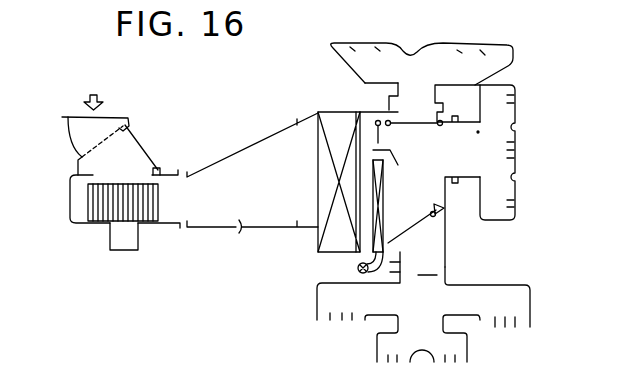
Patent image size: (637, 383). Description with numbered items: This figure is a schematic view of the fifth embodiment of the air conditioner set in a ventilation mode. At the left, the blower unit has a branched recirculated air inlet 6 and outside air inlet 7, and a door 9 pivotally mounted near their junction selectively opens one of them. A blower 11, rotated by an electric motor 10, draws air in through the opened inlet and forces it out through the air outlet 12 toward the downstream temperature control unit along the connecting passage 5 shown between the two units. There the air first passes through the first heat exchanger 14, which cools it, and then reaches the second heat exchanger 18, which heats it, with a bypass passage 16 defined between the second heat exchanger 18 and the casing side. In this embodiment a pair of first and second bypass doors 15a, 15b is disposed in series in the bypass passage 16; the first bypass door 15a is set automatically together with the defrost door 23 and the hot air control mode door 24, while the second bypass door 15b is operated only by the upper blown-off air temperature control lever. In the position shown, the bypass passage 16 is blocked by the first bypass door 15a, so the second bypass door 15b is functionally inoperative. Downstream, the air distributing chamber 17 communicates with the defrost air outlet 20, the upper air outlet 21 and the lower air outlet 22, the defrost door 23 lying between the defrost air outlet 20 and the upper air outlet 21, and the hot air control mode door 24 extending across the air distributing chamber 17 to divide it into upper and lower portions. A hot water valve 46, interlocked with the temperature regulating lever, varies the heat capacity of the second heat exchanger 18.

The conduit 5 is at (252, 241).
The recirculated air inlet 6 is at (157, 164).
The outside air inlet 7 is at (73, 115).
The door 9 is at (137, 142).
The electric motor 10 is at (126, 257).
The blower 11 is at (103, 208).
The air outlet 12 is at (170, 212).
The first heat exchanger 14 is at (333, 152).
The first bypass door 15a is at (370, 130).
The second bypass door 15b is at (388, 119).
The bypass passage 16 is at (340, 111).
The air distributing chamber 17 is at (420, 150).
The second heat exchanger 18 is at (373, 213).
The defrost air outlet 20 is at (407, 93).
The upper air outlet 21 is at (468, 168).
The lower air outlet 22 is at (448, 273).
The defrost door 23 is at (423, 116).
The hot air control mode door 24 is at (446, 235).
The hot water valve 46 is at (358, 266).